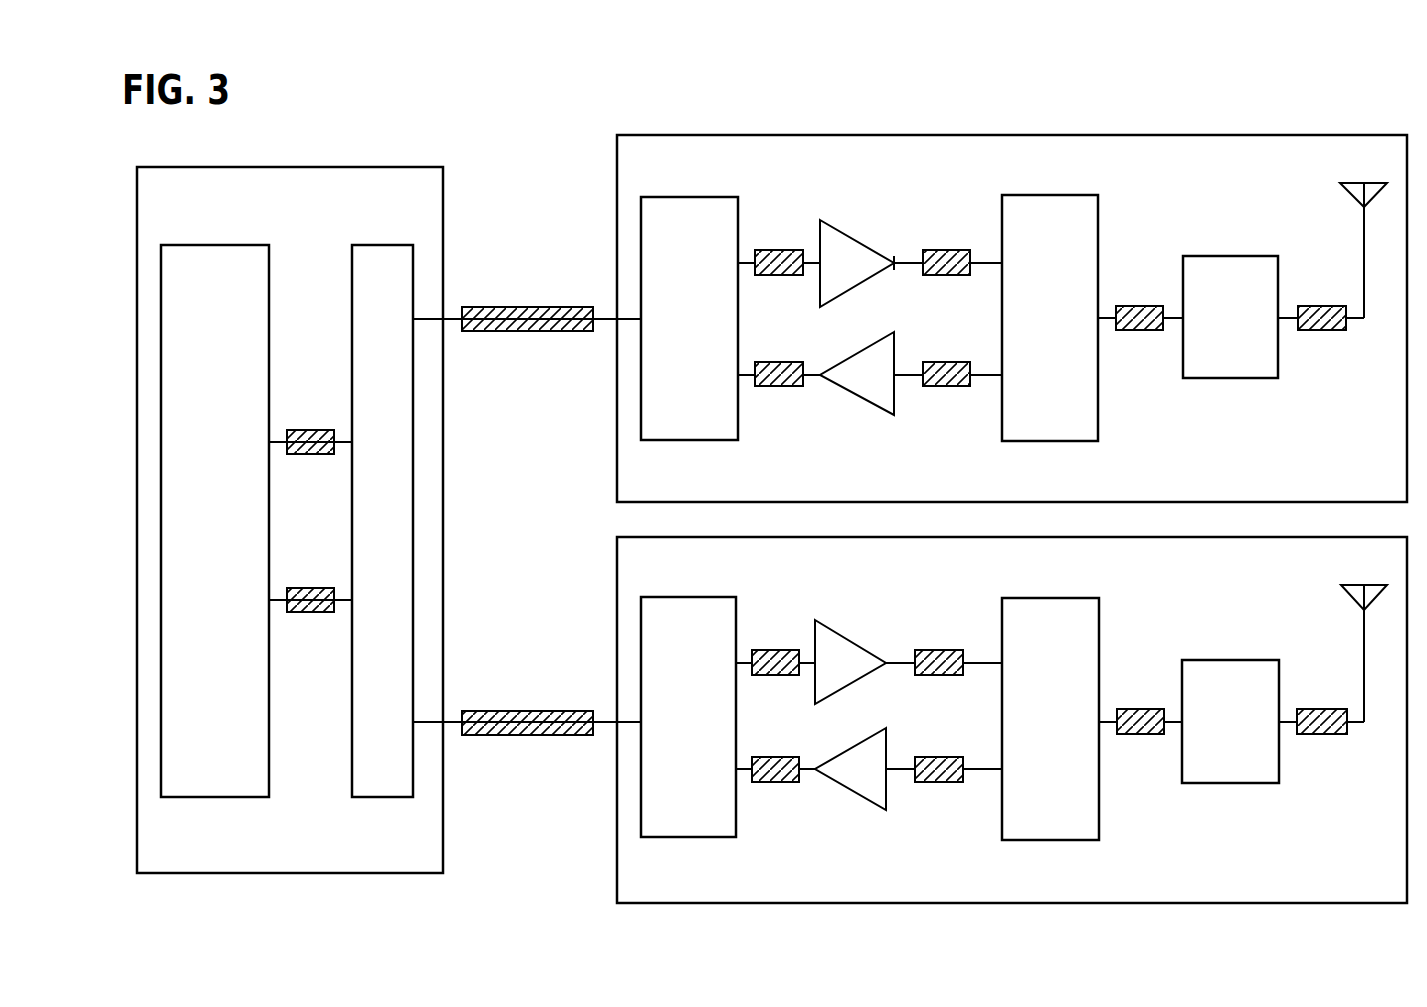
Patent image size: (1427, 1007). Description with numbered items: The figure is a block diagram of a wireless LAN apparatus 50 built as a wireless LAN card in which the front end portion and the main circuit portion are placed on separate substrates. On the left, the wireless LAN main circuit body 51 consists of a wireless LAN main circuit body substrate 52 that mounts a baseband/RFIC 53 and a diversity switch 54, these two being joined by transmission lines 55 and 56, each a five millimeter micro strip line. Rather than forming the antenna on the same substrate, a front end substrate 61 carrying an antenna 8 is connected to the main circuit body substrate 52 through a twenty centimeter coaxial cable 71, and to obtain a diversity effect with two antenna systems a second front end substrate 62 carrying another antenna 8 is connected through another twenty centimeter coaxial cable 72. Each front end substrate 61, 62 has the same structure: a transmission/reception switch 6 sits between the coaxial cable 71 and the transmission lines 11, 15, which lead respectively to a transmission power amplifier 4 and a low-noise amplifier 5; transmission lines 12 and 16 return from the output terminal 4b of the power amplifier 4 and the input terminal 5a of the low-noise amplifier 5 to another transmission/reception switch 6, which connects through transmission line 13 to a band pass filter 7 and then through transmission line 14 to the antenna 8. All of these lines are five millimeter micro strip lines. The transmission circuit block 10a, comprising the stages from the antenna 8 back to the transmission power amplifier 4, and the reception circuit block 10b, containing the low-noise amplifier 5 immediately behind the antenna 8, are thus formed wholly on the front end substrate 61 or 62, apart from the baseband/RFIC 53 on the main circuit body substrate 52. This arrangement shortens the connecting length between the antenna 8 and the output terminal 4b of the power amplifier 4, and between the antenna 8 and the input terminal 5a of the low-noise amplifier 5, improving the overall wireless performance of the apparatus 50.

The wireless LAN apparatus 50 is at (321, 104).
The wireless LAN main circuit body 51 is at (408, 882).
The wireless LAN main circuit body substrate 52 is at (207, 167).
The baseband/RFIC 53 is at (207, 245).
The diversity switch 54 is at (385, 245).
The transmission line 55 is at (311, 430).
The transmission line 56 is at (311, 588).
The front end substrate 61 is at (742, 135).
The front end substrate 62 is at (740, 537).
The transmission/reception switch 6 is at (685, 197).
The coaxial cable 71 is at (535, 307).
The coaxial cable 72 is at (535, 711).
The transmission power amplifier 4 is at (840, 240).
The output terminal 4b is at (895, 258).
The low-noise amplifier 5 is at (852, 360).
The input terminal 5a is at (898, 370).
The transmission circuit block 10a is at (870, 206).
The reception circuit block 10b is at (845, 411).
The transmission line 11 is at (780, 250).
The transmission line 12 is at (935, 250).
The transmission line 13 is at (1142, 306).
The transmission line 14 is at (1323, 306).
The transmission line 15 is at (780, 362).
The transmission line 16 is at (935, 362).
The band pass filter 7 is at (1228, 256).
The antenna 8 is at (1354, 183).